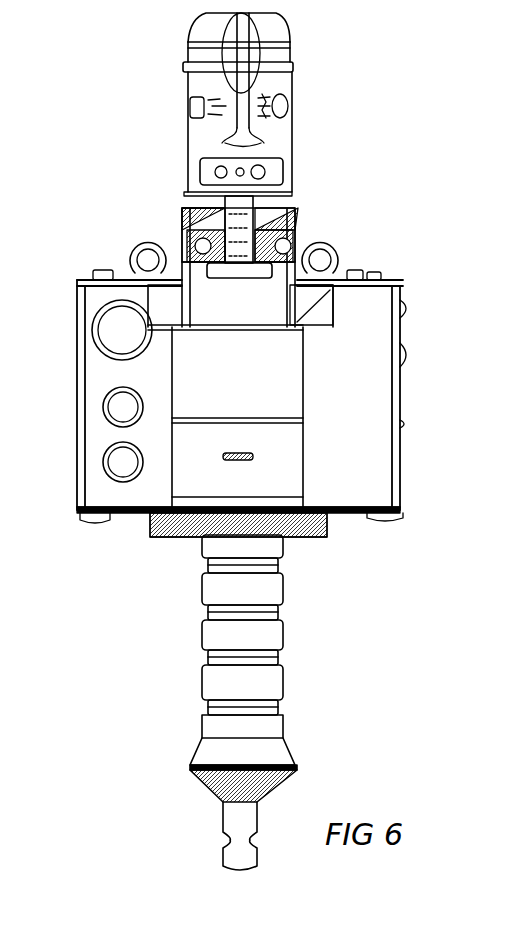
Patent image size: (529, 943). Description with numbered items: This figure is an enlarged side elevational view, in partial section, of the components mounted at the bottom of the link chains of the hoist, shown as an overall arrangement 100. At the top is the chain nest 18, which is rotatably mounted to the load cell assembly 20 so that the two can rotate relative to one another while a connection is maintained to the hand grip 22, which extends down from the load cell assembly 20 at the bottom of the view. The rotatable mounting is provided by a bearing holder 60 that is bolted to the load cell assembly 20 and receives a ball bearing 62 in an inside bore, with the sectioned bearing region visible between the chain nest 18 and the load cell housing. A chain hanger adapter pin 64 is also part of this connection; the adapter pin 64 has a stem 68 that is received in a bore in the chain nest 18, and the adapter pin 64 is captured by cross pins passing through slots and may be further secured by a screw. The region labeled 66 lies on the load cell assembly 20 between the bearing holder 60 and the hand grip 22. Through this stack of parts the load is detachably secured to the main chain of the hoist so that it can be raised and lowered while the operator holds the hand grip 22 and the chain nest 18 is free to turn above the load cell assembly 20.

The tool assembly cap 100 is at (295, 63).
The chain nest 18 is at (291, 135).
The bearing holder 60 is at (296, 216).
The stem 68 is at (236, 246).
The ball bearing 62 is at (184, 233).
The chain hanger adapter pin 64 is at (234, 290).
The central housing panel 66 is at (303, 357).
The load cell assembly 20 is at (402, 430).
The hand grip 22 is at (282, 668).